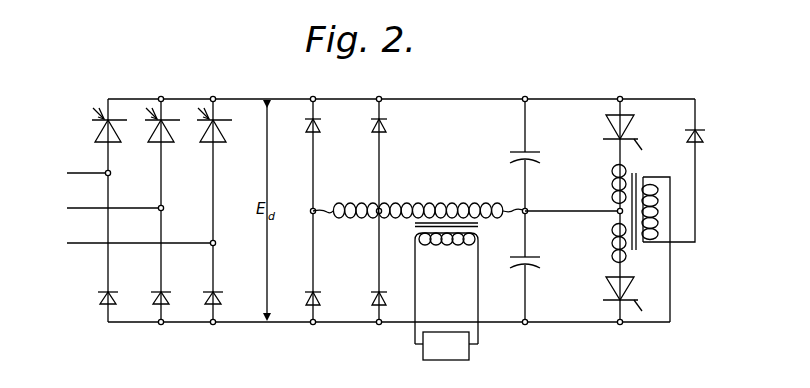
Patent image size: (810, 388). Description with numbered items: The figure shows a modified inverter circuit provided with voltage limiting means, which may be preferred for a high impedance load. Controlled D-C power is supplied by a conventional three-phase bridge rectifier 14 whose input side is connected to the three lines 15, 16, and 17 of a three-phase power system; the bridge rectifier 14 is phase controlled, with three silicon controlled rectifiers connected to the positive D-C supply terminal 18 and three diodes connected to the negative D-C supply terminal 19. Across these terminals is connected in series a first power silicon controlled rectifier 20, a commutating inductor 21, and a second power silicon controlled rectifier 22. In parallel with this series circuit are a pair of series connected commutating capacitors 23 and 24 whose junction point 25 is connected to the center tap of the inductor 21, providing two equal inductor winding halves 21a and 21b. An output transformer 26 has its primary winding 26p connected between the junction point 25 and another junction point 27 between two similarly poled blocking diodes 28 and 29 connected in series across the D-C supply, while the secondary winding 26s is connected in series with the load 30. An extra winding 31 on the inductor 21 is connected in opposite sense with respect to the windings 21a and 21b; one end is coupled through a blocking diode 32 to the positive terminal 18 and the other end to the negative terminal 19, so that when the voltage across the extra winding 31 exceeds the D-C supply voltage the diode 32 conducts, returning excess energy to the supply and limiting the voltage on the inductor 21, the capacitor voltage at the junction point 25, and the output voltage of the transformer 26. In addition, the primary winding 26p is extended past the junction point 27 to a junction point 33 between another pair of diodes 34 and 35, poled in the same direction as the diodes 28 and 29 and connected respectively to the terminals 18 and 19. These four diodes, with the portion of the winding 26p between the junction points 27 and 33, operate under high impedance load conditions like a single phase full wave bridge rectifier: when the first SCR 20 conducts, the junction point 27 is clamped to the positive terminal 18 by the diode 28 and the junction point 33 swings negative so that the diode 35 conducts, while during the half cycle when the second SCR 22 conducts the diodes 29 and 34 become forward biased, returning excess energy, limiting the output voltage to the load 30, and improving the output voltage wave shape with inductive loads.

The three-phase bridge rectifier 14 is at (194, 190).
The three-phase line 15 is at (80, 173).
The three-phase line 16 is at (79, 208).
The three-phase line 17 is at (79, 243).
The positive D-C supply terminal 18 is at (241, 98).
The negative D-C supply terminal 19 is at (286, 322).
The first power silicon controlled rectifier 20 is at (610, 122).
The commutating inductor 21 is at (612, 219).
The inductor winding half 21a is at (612, 180).
The inductor winding half 21b is at (612, 234).
The second power silicon controlled rectifier 22 is at (612, 289).
The commutating capacitor 23 is at (518, 152).
The commutating capacitor 24 is at (531, 258).
The junction point 25 is at (528, 210).
The output transformer 26 is at (419, 259).
The primary winding 26p is at (443, 204).
The secondary winding 26s is at (450, 246).
The junction point 27 is at (377, 215).
The blocking diode 28 is at (386, 123).
The blocking diode 29 is at (376, 292).
The load 30 is at (470, 351).
The extra winding 31 is at (651, 181).
The blocking diode 32 is at (704, 132).
The junction point 33 is at (312, 210).
The diode 34 is at (310, 120).
The diode 35 is at (310, 292).